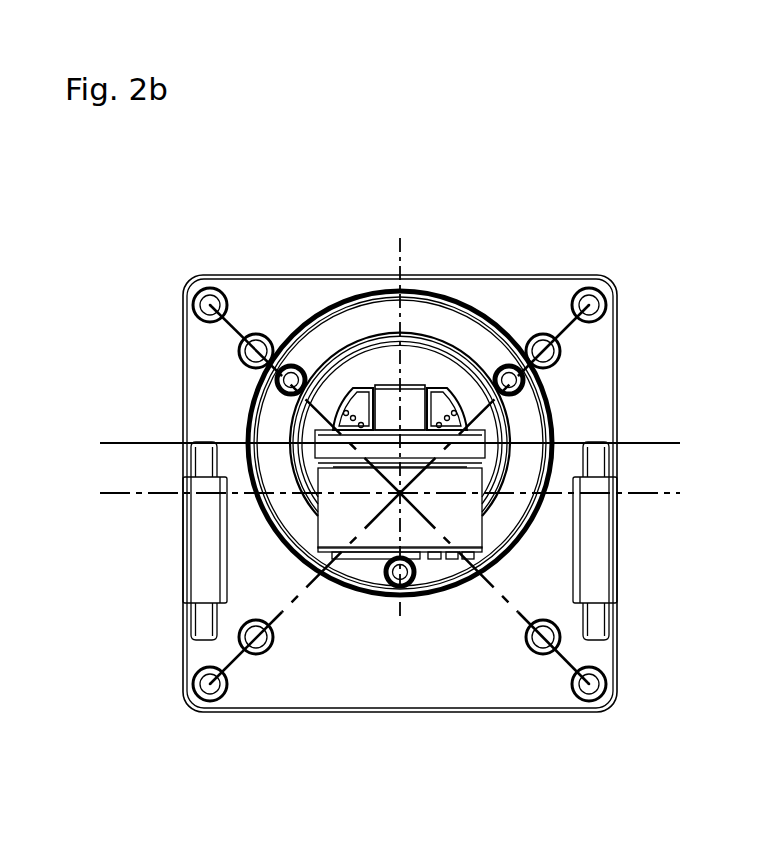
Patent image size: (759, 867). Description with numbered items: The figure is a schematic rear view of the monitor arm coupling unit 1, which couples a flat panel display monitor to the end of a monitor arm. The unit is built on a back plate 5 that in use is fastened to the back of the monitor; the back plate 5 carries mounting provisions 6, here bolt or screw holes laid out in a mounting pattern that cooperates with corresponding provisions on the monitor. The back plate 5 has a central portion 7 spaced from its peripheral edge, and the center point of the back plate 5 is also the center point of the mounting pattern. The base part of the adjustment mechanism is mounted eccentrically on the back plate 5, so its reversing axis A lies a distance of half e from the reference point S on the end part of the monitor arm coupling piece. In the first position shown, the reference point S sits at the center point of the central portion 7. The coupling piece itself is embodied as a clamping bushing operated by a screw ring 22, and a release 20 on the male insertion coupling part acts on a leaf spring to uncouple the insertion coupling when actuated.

The monitor arm coupling unit 1 is at (390, 456).
The back plate 5 is at (300, 678).
The mounting provisions 6 is at (580, 702).
The central portion 7 is at (390, 481).
The release 20 is at (360, 405).
The screw ring 22 is at (333, 447).
The reversing axis A is at (390, 429).
The reference point S is at (400, 493).